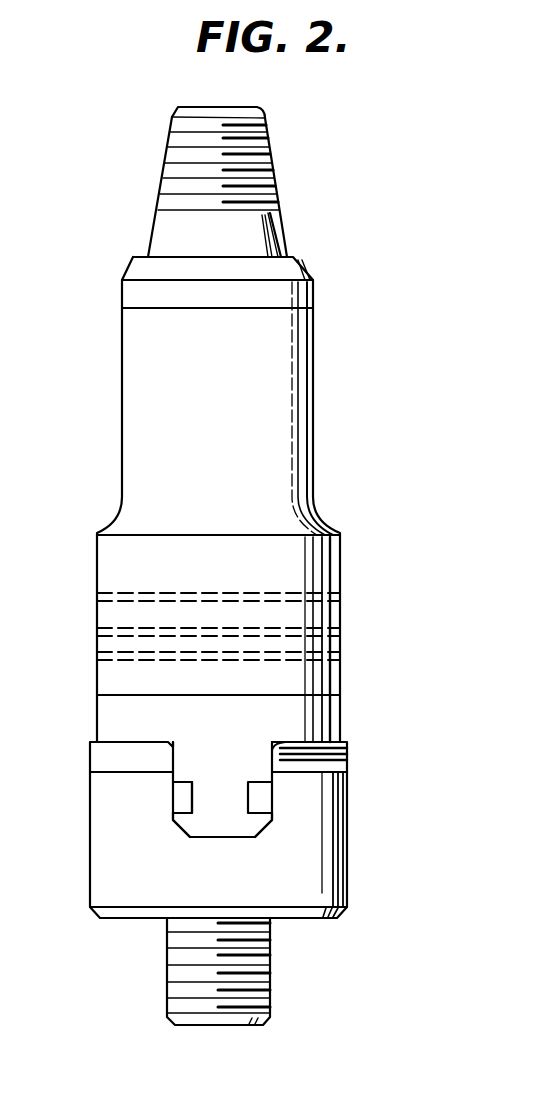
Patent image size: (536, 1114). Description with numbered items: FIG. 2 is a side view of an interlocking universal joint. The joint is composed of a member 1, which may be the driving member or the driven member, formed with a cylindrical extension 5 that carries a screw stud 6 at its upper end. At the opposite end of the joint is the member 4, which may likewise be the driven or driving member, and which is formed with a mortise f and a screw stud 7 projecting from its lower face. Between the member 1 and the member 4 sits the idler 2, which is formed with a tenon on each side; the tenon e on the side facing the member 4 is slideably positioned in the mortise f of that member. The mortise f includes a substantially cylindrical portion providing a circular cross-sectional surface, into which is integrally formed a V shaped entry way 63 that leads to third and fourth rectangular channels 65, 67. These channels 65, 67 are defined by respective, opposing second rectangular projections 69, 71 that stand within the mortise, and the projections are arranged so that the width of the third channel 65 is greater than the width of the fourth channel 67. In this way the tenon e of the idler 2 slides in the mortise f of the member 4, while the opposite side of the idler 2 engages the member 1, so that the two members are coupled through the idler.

The member 1 is at (328, 570).
The idler 2 is at (333, 718).
The member 4 is at (350, 857).
The cylindrical extension 5 is at (290, 370).
The screw stud 6 is at (273, 175).
The screw stud 7 is at (270, 993).
The V shaped entry way 63 is at (293, 741).
The third rectangular channel 65 is at (170, 835).
The fourth rectangular channel 67 is at (175, 784).
The second rectangular projection 69 is at (262, 798).
The second rectangular projection 71 is at (178, 796).
The tenon e is at (210, 823).
The mortise f is at (270, 830).